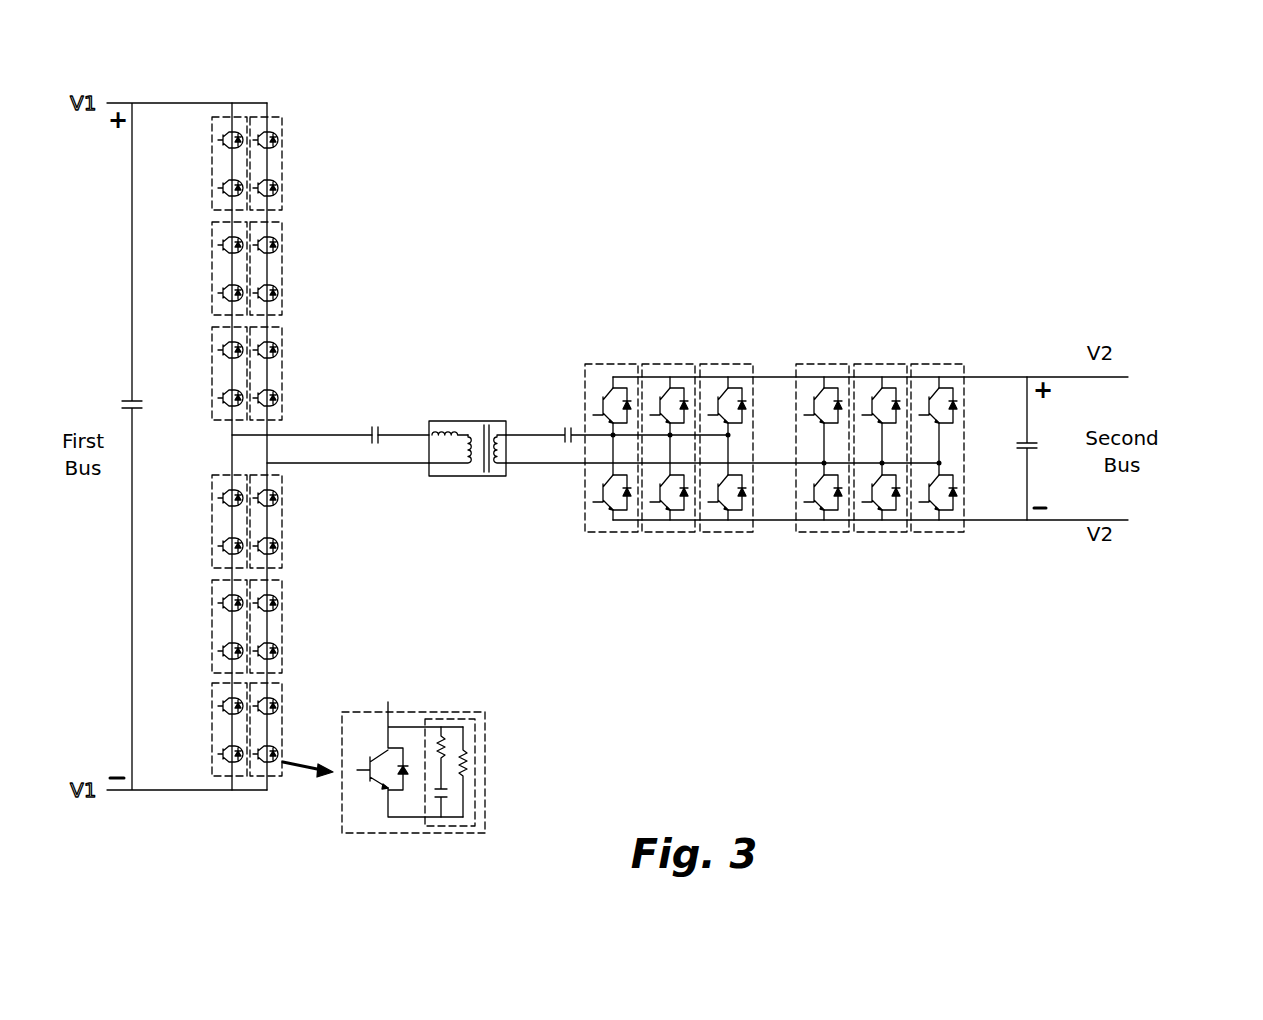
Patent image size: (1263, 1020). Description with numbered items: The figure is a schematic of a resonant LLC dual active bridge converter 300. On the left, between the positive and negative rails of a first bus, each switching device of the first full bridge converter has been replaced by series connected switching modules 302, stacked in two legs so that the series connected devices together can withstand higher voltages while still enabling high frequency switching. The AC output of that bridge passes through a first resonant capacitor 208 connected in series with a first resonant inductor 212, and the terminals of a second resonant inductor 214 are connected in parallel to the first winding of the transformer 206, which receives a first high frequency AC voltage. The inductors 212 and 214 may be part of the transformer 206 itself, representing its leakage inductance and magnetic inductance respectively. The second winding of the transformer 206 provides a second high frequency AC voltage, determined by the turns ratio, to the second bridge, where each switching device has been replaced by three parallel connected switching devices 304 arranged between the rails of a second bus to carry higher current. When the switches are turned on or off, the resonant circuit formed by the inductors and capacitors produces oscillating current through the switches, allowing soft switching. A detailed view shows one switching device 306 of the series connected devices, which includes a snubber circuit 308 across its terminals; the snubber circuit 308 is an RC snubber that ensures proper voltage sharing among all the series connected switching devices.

The resonant LLC dual active bridge converter 300 is at (1172, 242).
The series connected switching modules 302 is at (212, 379).
The parallel connected switching devices 304 is at (728, 364).
The transformer 206 is at (457, 446).
The first resonant capacitor 208 is at (374, 417).
The first resonant inductor 212 is at (441, 430).
The second resonant inductor 214 is at (467, 463).
The switching device 306 is at (375, 713).
The snubber circuit 308 is at (480, 735).